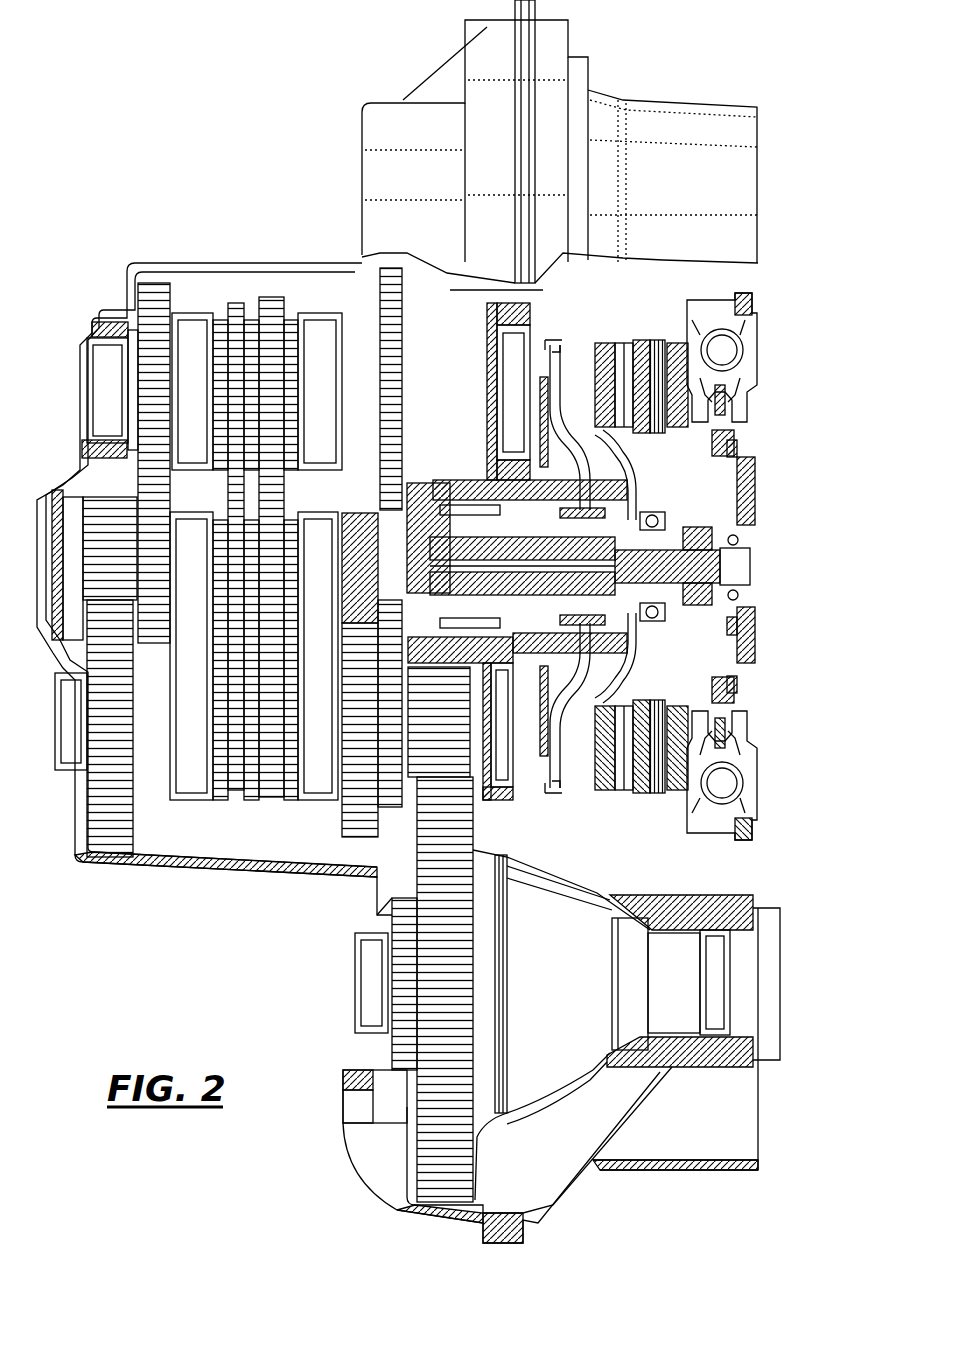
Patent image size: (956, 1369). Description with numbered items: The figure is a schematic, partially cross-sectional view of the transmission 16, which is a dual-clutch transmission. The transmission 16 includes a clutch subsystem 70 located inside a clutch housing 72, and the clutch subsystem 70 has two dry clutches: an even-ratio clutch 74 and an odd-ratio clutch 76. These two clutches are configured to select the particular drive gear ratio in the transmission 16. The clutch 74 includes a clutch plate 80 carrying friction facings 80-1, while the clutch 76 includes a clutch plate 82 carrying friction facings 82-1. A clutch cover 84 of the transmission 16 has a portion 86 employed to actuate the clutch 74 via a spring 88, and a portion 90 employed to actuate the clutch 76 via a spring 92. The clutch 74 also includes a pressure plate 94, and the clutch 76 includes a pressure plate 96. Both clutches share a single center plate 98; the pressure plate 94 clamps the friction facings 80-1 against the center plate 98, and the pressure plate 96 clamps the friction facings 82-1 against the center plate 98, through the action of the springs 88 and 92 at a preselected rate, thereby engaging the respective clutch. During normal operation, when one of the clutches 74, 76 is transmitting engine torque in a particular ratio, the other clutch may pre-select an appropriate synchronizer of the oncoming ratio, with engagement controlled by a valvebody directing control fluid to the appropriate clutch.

The transmission 16 is at (303, 227).
The clutch subsystem 70 is at (771, 480).
The clutch housing 72 is at (737, 897).
The clutch 74 is at (603, 330).
The clutch 76 is at (657, 340).
The clutch plate 80 is at (600, 700).
The friction facings 80-1 is at (612, 782).
The clutch plate 82 is at (660, 693).
The friction facings 82-1 is at (653, 790).
The clutch cover 84 is at (551, 778).
The portion 86 is at (577, 793).
The spring 88 is at (580, 660).
The portion 90 is at (583, 877).
The spring 92 is at (530, 690).
The pressure plate 94 is at (603, 345).
The pressure plate 96 is at (677, 400).
The center plate 98 is at (636, 345).